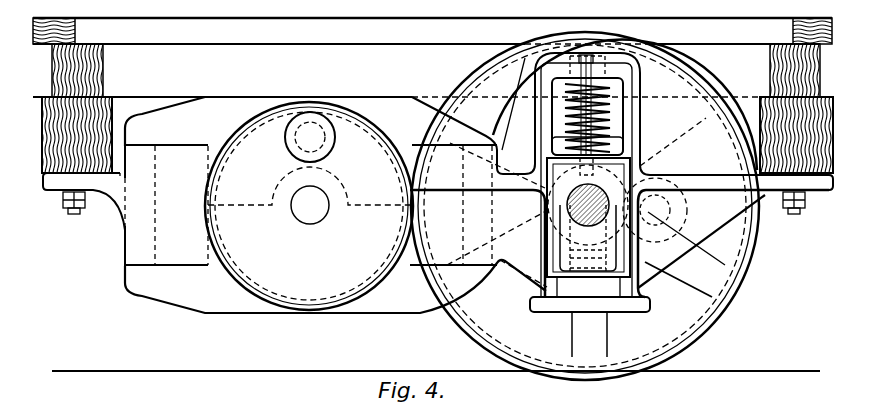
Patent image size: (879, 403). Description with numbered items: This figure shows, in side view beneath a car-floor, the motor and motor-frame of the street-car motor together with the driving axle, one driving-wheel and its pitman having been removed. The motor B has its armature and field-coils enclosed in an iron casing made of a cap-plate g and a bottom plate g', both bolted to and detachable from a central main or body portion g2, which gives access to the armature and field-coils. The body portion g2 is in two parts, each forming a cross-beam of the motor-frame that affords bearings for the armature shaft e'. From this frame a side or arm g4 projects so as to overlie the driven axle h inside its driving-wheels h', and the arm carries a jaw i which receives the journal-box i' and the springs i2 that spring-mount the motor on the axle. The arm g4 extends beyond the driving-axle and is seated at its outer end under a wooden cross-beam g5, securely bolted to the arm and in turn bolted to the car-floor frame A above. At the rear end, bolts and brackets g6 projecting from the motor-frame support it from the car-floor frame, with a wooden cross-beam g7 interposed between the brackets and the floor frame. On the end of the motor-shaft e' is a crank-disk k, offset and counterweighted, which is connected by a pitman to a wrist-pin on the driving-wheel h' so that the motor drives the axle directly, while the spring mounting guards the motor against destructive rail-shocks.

The car body frame / sill A is at (433, 57).
The motor B is at (84, 212).
The cap-plate g is at (330, 135).
The bottom plate g' is at (335, 286).
The central main or body portion g2 is at (308, 206).
The side or arm of motor-frame g4 is at (818, 182).
The wooden cross-beam g5 is at (796, 135).
The bolts and brackets g6 is at (61, 177).
The wooden cross-beam g7 is at (77, 135).
The crank-disk k is at (309, 206).
The armature shaft e' is at (309, 195).
The driven axle h is at (588, 205).
The driving-wheel h' is at (589, 206).
The jaw i is at (621, 197).
The journal-box i' is at (588, 217).
The springs i2 is at (587, 105).